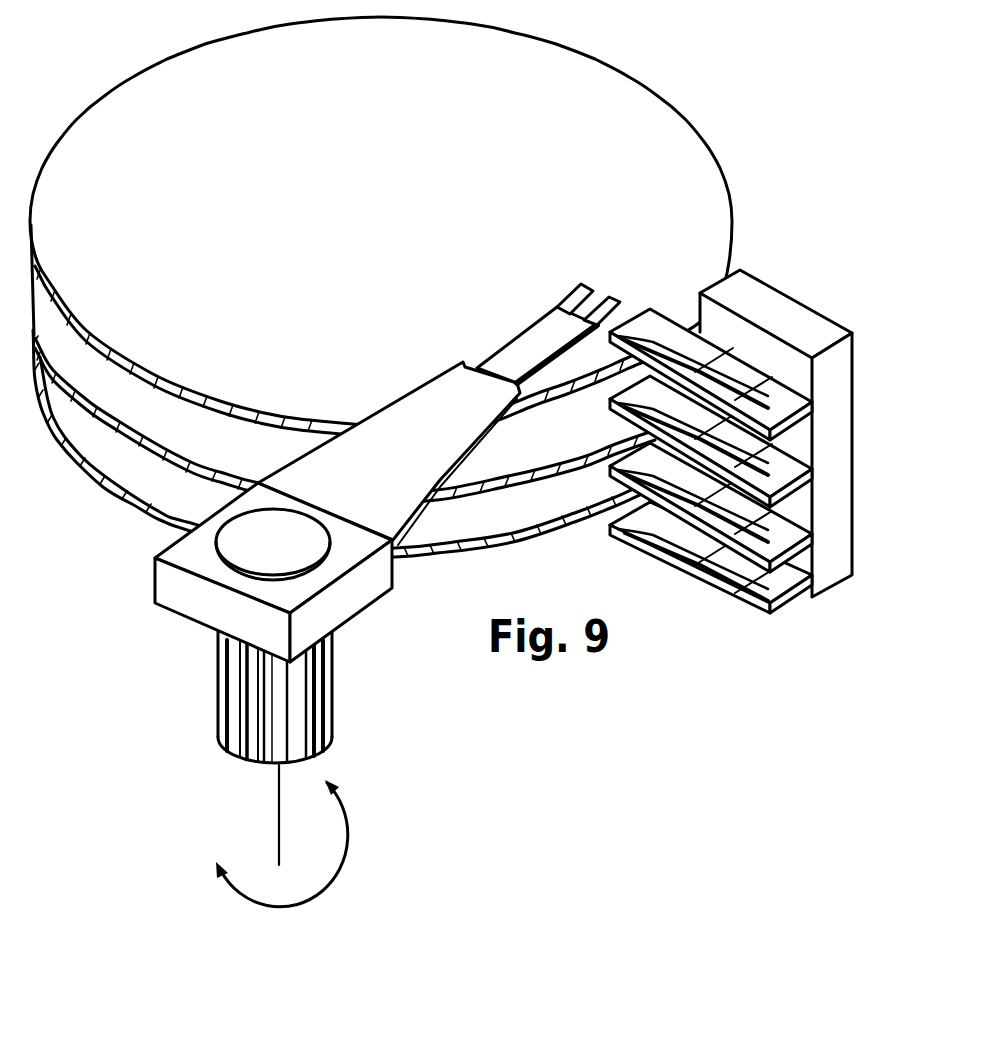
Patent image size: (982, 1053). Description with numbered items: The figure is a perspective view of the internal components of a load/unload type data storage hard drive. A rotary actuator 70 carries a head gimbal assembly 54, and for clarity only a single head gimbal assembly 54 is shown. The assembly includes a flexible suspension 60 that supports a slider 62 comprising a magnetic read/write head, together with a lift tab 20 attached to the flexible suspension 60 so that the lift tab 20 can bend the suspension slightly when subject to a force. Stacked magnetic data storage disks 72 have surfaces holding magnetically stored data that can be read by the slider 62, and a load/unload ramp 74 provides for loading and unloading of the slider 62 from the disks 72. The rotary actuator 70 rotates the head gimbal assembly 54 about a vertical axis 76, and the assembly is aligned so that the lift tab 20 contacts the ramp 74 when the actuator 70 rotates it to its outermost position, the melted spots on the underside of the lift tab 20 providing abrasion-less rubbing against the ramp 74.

The lift tab 20 is at (580, 302).
The head gimbal assembly 54 is at (408, 355).
The flexible suspension 60 is at (509, 353).
The slider 62 is at (568, 366).
The rotary actuator 70 is at (317, 707).
The magnetic data storage disks 72 is at (211, 336).
The load/unload ramp 74 is at (655, 325).
The vertical axis 76 is at (280, 815).